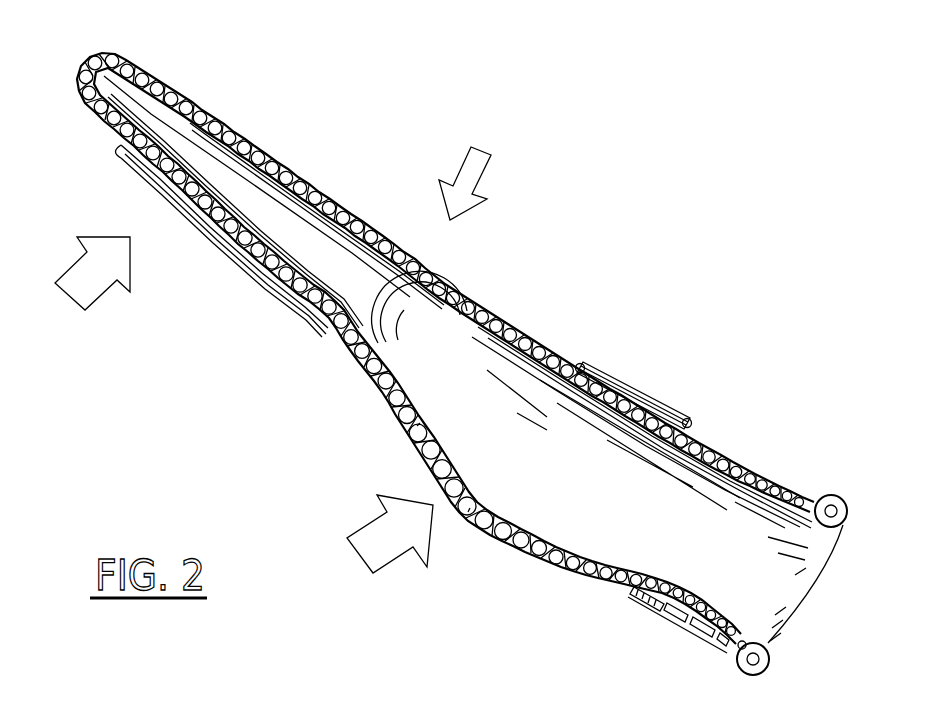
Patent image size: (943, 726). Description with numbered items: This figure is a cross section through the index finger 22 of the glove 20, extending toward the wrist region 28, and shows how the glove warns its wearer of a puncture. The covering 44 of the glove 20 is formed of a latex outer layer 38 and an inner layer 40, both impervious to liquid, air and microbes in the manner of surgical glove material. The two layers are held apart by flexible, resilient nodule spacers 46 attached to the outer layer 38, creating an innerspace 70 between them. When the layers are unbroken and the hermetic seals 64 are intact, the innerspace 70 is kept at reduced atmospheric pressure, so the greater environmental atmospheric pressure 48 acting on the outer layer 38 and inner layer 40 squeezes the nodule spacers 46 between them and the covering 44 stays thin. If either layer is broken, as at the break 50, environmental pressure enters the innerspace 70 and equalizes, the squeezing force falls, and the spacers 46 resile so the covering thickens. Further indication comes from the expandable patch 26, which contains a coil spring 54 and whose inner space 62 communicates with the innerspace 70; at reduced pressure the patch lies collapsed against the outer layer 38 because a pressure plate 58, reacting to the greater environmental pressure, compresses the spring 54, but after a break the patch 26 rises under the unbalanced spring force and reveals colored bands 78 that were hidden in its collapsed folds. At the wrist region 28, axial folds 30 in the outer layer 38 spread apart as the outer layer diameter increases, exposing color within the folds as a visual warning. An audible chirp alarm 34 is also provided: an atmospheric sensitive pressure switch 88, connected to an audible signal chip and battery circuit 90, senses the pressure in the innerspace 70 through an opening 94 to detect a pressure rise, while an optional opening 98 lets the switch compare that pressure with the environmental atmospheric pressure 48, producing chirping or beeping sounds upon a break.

The glove 20 is at (390, 240).
The index finger 22 is at (80, 98).
The expandable patch 26 is at (643, 357).
The wrist region 28 is at (720, 508).
The folds 30 is at (722, 447).
The audible chirp alarm 34 is at (727, 640).
The outer layer 38 is at (343, 207).
The inner layer 40 is at (235, 147).
The covering 44 is at (385, 394).
The nodule spacers 46 is at (158, 80).
The environmental atmospheric pressure 48 is at (492, 163).
The break 50 is at (468, 512).
The coil spring 54 is at (648, 397).
The pressure plate 58 is at (663, 404).
The inner space of expandable patch 62 is at (686, 416).
The hermetic seals 64 is at (831, 511).
The innerspace 70 is at (417, 426).
The colored bands 78 is at (582, 362).
The atmospheric sensitive pressure switch 88 is at (660, 604).
The audible signal chip and battery circuit 90 is at (707, 632).
The opening 94 is at (643, 588).
The optional opening 98 is at (670, 614).